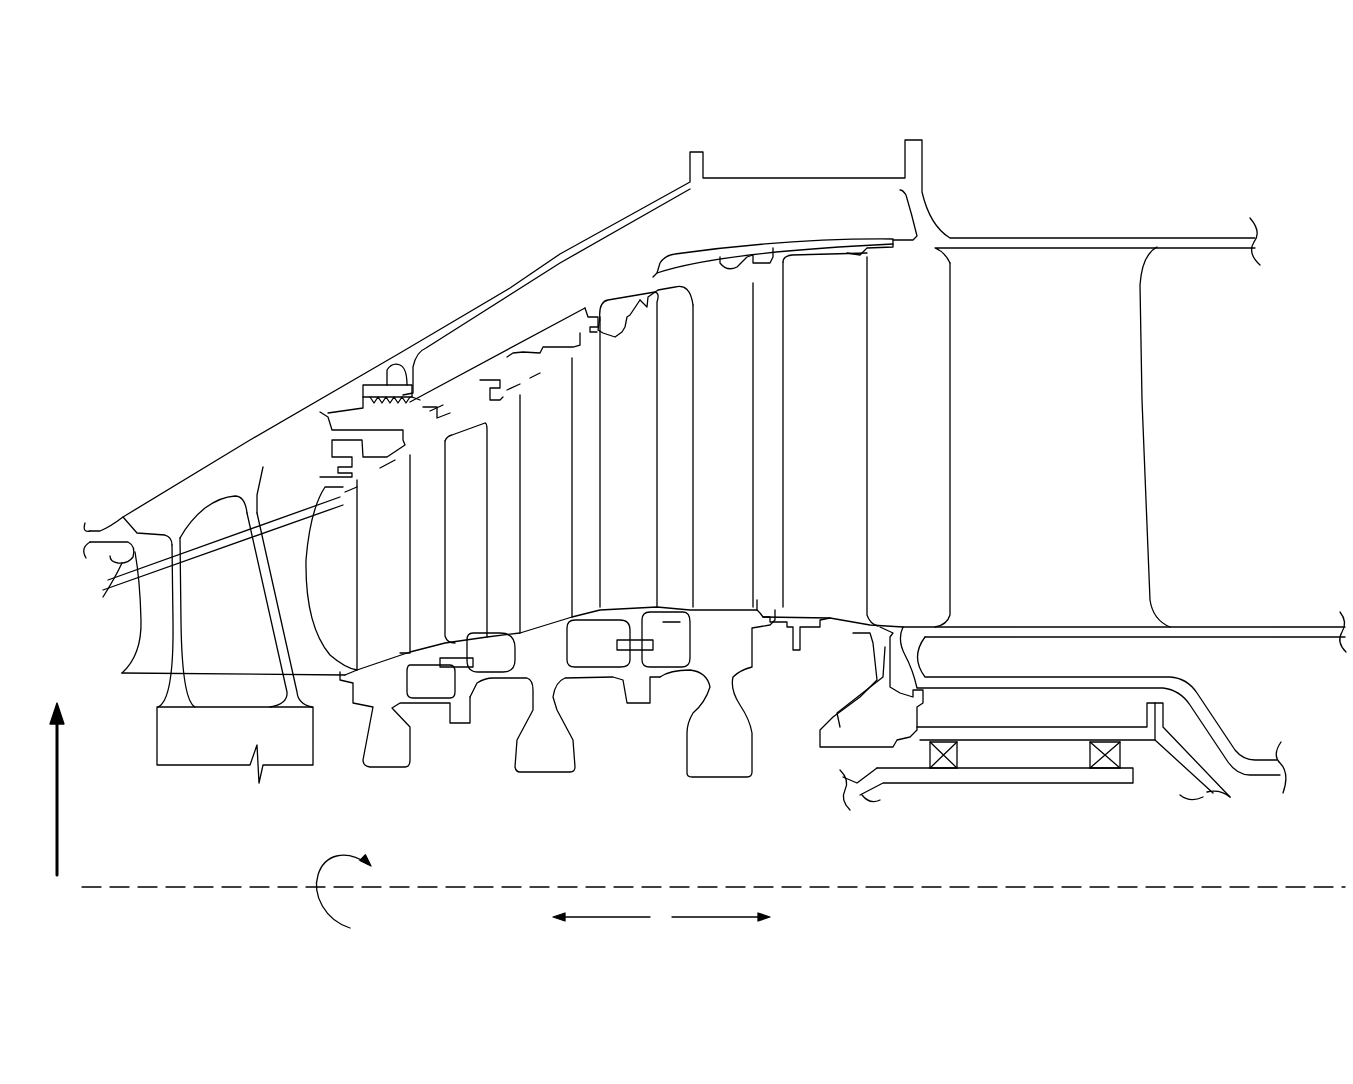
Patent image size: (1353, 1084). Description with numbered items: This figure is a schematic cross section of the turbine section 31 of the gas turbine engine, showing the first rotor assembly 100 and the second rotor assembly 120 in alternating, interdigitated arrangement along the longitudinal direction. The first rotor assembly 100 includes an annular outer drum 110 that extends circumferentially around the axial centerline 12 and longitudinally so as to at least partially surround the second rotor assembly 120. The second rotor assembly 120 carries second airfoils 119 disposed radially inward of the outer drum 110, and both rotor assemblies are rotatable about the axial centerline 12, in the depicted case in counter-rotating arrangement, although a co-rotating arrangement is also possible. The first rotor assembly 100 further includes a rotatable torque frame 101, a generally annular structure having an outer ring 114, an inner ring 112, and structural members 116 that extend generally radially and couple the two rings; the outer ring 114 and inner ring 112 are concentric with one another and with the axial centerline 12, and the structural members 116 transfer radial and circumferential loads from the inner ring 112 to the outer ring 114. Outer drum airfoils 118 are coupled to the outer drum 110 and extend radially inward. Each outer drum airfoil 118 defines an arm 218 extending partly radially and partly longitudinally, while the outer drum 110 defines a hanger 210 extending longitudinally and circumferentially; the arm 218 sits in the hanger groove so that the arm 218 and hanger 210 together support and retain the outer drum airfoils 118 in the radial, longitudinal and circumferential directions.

The turbine section 31 is at (782, 83).
The first rotor assembly 100 is at (810, 205).
The hanger 210 is at (580, 318).
The arm 218 is at (610, 311).
The outer drum 110 is at (487, 366).
The outer ring 114 is at (848, 245).
The torque frame 101 is at (872, 398).
The second airfoil 119 is at (400, 600).
The outer drum airfoil 118 is at (482, 557).
The structural member 116 is at (845, 483).
The inner ring 112 is at (830, 620).
The second rotor assembly 120 is at (665, 750).
The axial centerline 12 is at (158, 887).